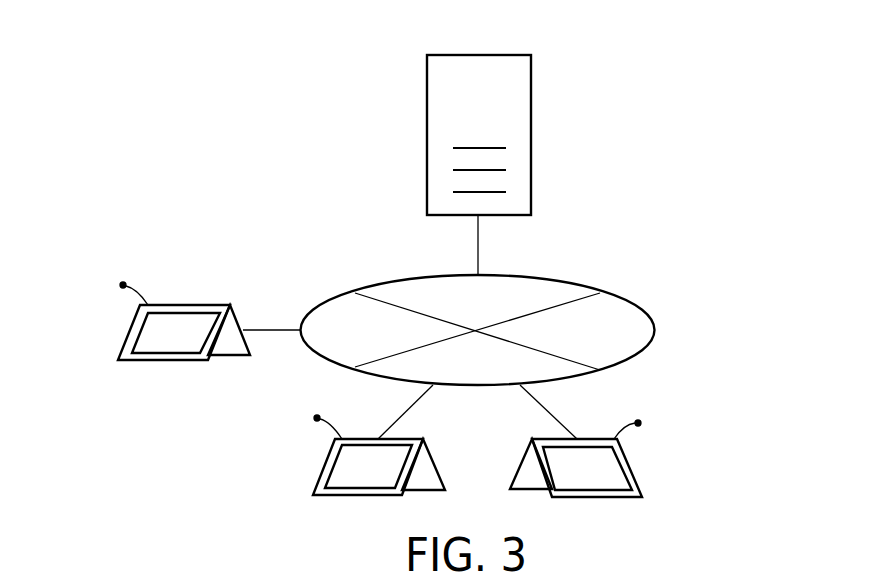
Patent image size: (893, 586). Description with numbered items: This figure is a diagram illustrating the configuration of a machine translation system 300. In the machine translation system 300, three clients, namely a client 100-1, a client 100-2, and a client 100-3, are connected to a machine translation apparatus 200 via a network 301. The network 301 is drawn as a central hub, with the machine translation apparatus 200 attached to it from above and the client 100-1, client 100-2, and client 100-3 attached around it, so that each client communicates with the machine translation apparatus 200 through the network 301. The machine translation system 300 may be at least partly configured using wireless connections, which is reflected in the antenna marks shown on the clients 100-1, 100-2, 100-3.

The machine translation system 300 is at (680, 106).
The machine translation apparatus 200 is at (531, 70).
The network 301 is at (655, 330).
The client 100-1 is at (130, 330).
The client 100-2 is at (323, 465).
The client 100-3 is at (642, 460).